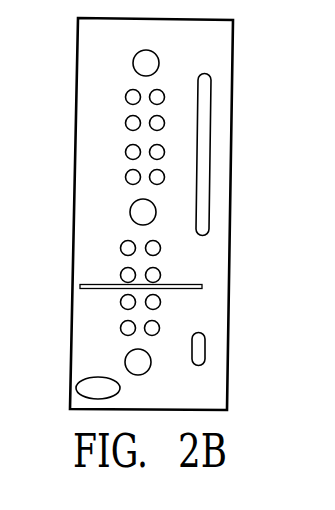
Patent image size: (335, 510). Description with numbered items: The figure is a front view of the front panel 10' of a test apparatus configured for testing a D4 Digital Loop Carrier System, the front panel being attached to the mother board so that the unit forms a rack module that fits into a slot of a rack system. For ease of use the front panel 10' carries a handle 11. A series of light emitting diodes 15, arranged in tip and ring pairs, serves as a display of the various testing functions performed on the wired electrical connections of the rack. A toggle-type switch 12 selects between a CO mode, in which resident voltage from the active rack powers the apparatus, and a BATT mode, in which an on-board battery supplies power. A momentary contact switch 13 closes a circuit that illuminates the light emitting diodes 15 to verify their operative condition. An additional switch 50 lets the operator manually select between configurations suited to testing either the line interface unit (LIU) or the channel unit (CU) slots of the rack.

The front panel 10' is at (185, 210).
The handle 11 is at (203, 155).
The toggle-type switch 12 is at (137, 53).
The momentary contact switch 13 is at (127, 351).
The light emitting diodes 15 is at (152, 168).
The additional switch 50 is at (135, 203).